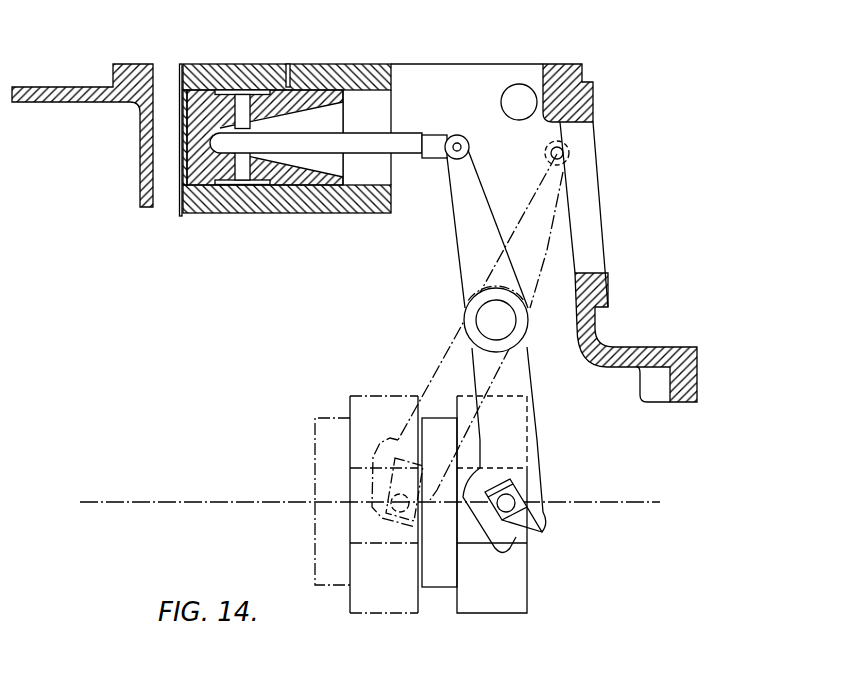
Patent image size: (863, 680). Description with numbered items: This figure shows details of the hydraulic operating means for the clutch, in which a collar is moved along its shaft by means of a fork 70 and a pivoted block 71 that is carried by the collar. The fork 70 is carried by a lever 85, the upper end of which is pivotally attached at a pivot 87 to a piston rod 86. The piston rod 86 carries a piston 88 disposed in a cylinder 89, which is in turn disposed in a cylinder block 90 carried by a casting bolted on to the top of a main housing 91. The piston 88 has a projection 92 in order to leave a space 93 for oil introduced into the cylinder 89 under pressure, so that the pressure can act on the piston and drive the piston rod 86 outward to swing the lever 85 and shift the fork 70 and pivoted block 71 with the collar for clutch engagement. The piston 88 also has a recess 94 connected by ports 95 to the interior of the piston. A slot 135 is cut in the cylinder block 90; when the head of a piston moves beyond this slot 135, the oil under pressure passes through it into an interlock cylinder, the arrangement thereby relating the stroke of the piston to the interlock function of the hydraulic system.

The fork 70 is at (532, 478).
The pivoted block 71 is at (503, 522).
The lever 85 is at (467, 183).
The piston rod 86 is at (339, 146).
The pivot 87 is at (458, 143).
The piston 88 is at (295, 186).
The cylinder 89 is at (382, 116).
The cylinder block 90 is at (367, 78).
The main housing 91 is at (136, 64).
The projection 92 is at (187, 143).
The space 93 is at (183, 205).
The recess 94 is at (230, 92).
The ports 95 is at (243, 110).
The slot 135 is at (289, 68).